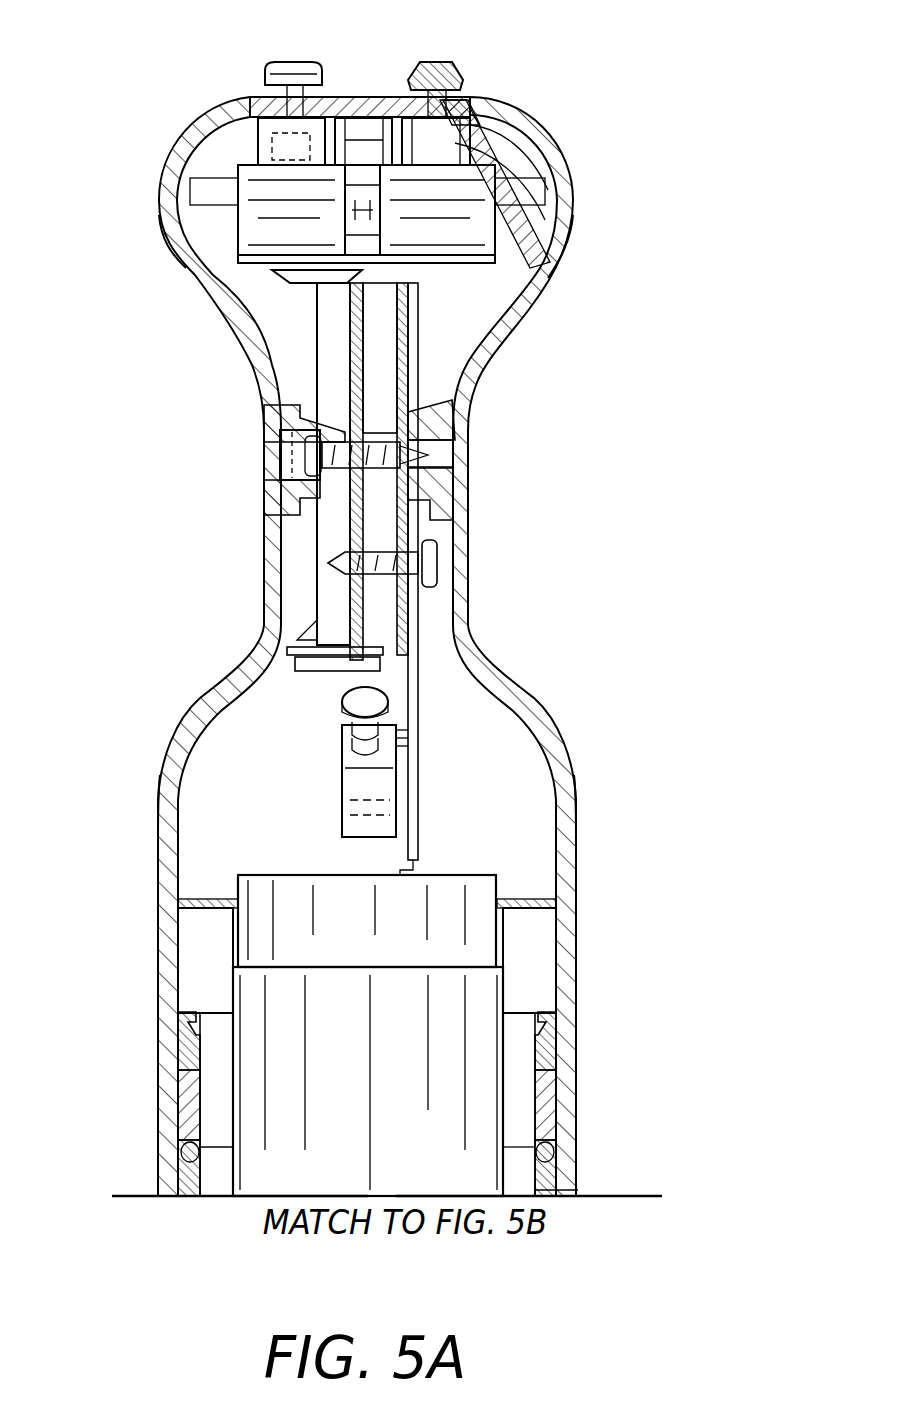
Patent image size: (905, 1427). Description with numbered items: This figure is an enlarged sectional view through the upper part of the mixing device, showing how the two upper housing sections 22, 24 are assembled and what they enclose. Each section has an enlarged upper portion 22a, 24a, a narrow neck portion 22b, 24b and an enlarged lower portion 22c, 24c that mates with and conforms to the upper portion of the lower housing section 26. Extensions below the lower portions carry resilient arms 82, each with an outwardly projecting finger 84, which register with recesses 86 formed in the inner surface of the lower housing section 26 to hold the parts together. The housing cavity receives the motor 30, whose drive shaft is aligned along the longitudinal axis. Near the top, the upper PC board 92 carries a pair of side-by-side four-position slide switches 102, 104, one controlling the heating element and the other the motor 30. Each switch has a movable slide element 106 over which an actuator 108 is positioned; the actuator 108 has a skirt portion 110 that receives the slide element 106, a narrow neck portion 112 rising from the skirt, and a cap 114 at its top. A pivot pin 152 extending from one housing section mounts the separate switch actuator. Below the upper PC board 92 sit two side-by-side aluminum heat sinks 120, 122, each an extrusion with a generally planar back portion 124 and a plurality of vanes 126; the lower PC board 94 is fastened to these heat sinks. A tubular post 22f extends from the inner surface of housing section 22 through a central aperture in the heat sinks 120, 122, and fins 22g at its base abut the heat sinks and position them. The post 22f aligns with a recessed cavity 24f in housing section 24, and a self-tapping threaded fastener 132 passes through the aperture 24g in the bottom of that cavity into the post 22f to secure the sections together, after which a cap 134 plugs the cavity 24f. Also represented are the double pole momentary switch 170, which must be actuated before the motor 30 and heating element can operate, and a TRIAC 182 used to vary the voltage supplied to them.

The upper housing section 22 is at (532, 712).
The enlarged upper portion 22a is at (566, 186).
The narrow neck portion 22b is at (468, 540).
The enlarged lower portion 22c is at (562, 785).
The tubular post 22f is at (470, 500).
The fins 22g is at (470, 450).
The upper housing section 24 is at (188, 700).
The enlarged upper portion 24a is at (168, 198).
The narrow neck portion 24b is at (272, 560).
The enlarged lower portion 24c is at (172, 795).
The recessed cavity 24f is at (266, 408).
The aperture 24g is at (283, 590).
The lower housing section 26 is at (585, 1178).
The motor 30 is at (300, 890).
The resilient arms 82 is at (166, 1068).
The outwardly projecting finger 84 is at (170, 1118).
The recesses 86 is at (170, 1172).
The upper PC board 92 is at (508, 270).
The lower PC board 94 is at (447, 592).
The slide switch 102 is at (480, 215).
The slide switch 104 is at (255, 232).
The movable slide element 106 is at (553, 142).
The actuator 108 is at (240, 145).
The skirt portion 110 is at (500, 130).
The narrow neck portion 112 is at (468, 105).
The cap 114 is at (292, 64).
The heat sink 120 is at (308, 372).
The heat sink 122 is at (428, 370).
The planar back portion 124 is at (425, 300).
The vanes 126 is at (330, 332).
The self-tapping threaded fastener 132 is at (292, 455).
The cap 134 is at (290, 487).
The pivot pin 152 is at (392, 97).
The double pole momentary switch 170 is at (410, 805).
The TRIAC 182 is at (448, 640).